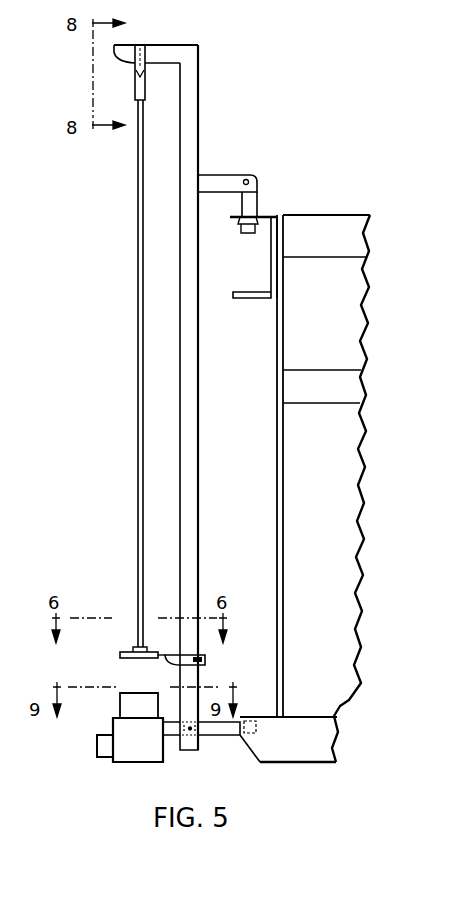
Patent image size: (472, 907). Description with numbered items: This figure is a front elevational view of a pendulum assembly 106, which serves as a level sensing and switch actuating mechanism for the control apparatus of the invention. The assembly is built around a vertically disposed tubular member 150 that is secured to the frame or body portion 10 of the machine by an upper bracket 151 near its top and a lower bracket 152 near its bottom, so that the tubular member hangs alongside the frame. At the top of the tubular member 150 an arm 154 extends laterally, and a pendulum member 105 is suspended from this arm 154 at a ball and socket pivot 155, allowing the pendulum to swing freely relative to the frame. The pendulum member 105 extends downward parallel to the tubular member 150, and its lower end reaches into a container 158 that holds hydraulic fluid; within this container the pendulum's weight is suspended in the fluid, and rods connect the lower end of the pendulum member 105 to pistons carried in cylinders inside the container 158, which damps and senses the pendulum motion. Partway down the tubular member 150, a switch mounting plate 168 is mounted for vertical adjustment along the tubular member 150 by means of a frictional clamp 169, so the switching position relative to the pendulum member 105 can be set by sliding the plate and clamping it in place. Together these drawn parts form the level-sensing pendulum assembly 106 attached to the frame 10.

The frame or body portion 10 is at (330, 216).
The pendulum member 105 is at (140, 363).
The pendulum assembly 106 is at (198, 70).
The tubular member 150 is at (190, 128).
The upper bracket 151 is at (228, 184).
The lower bracket 152 is at (220, 730).
The arm 154 is at (162, 53).
The ball and socket pivot 155 is at (146, 73).
The container 158 is at (129, 751).
The switch mounting plate 168 is at (120, 656).
The frictional clamp 169 is at (206, 660).